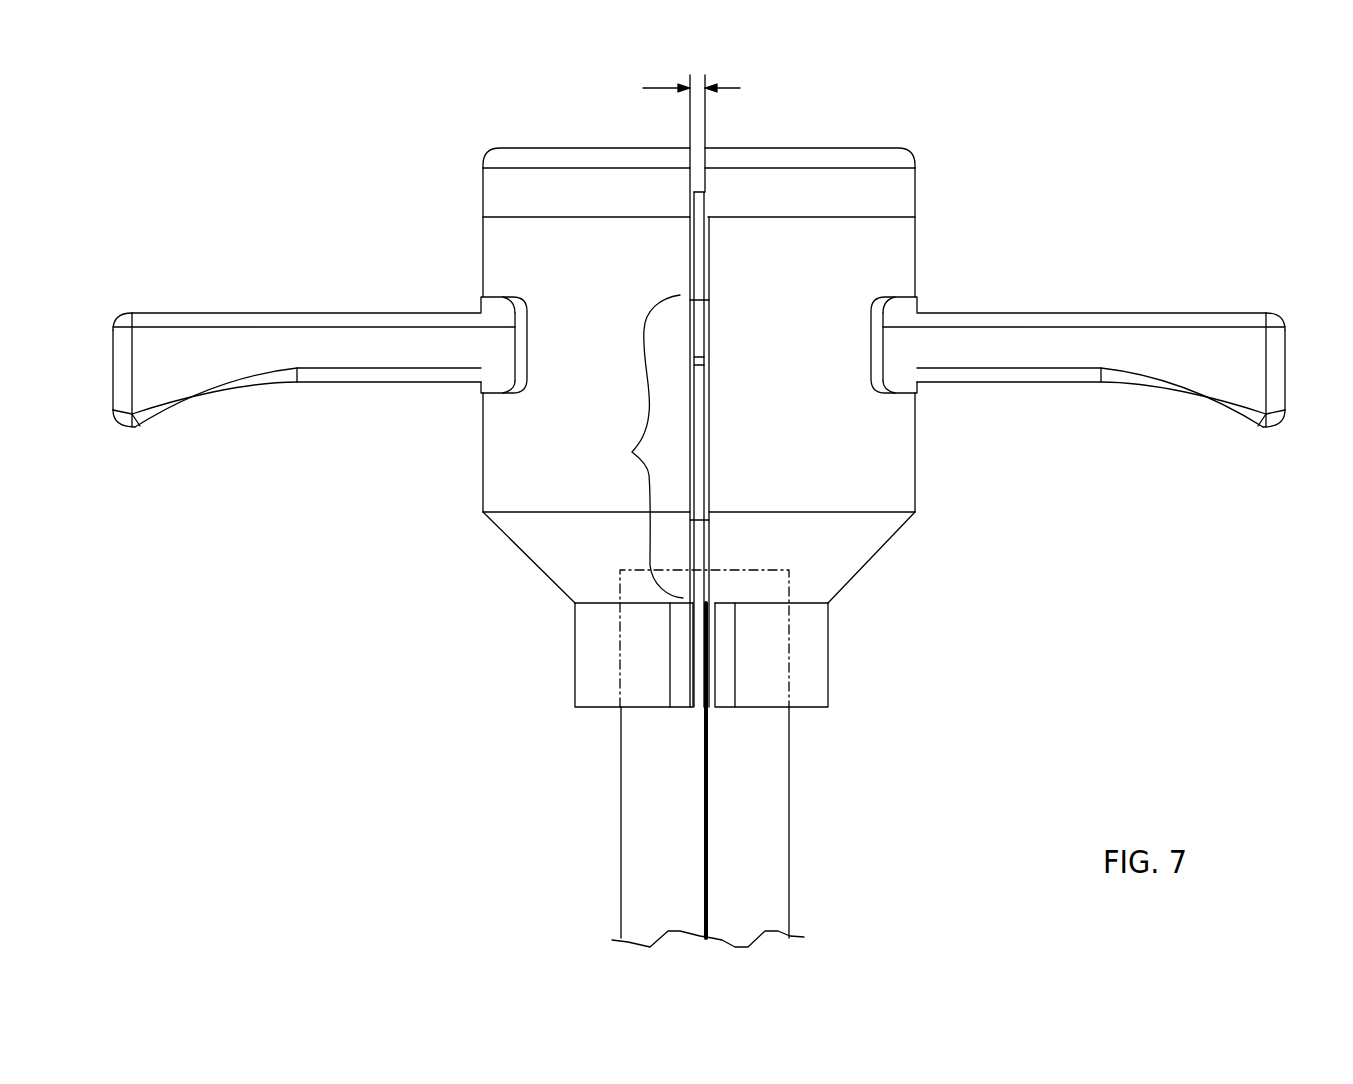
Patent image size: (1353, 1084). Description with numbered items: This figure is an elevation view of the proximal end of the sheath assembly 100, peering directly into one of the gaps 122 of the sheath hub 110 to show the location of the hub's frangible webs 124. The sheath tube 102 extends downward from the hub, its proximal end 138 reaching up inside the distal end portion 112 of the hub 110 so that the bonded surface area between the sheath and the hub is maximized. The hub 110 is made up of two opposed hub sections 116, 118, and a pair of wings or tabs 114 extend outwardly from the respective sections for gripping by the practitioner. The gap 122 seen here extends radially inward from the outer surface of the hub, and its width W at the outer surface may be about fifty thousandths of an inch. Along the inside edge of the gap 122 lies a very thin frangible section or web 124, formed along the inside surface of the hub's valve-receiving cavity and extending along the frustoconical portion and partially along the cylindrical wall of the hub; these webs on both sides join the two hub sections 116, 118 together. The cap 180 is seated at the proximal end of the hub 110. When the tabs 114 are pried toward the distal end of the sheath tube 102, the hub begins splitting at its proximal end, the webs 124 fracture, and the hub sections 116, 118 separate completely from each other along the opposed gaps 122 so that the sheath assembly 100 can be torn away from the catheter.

The sheath assembly 100 is at (1097, 215).
The sheath tube 102 is at (797, 833).
The sheath hub 110 is at (483, 459).
The distal end portion of the hub 112 is at (832, 688).
The wings or tabs 114 is at (185, 407).
The first hub section 116 is at (481, 417).
The second hub section 118 is at (917, 427).
The gap 122 is at (712, 680).
The frangible section or web 124 is at (632, 452).
The proximal end of sheath 138 is at (753, 567).
The cap 180 is at (917, 180).